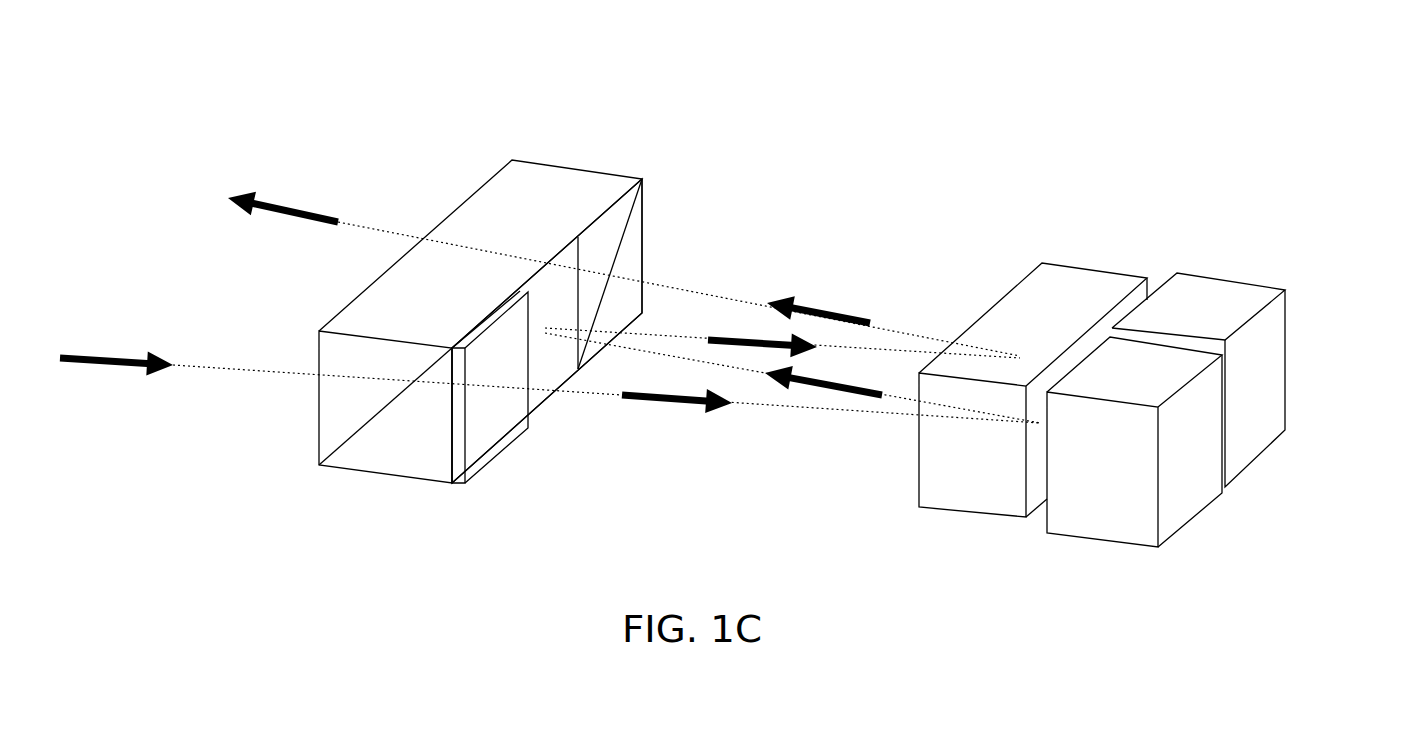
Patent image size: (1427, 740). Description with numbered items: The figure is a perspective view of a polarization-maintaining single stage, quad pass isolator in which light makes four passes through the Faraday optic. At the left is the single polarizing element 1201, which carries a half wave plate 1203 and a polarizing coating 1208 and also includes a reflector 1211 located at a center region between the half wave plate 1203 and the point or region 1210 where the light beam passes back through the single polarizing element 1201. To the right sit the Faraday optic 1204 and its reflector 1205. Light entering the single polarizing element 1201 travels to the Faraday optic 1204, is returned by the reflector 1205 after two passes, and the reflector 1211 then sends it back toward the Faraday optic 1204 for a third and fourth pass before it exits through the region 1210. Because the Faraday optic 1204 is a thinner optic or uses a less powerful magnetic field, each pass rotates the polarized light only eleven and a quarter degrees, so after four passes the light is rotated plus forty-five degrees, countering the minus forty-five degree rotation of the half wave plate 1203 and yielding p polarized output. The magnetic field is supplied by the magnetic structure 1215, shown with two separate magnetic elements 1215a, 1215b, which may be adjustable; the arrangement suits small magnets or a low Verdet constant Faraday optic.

The single polarizing element 1201 is at (558, 300).
The half wave plate 1203 is at (482, 440).
The Faraday optic 1204 is at (982, 368).
The reflector 1205 is at (960, 480).
The polarizing coating 1208 is at (357, 433).
The point or region 1210 is at (625, 257).
The reflector 1211 is at (547, 372).
The magnetic structure 1215 is at (1213, 386).
The magnetic element 1215a is at (1130, 515).
The magnetic element 1215b is at (1255, 403).